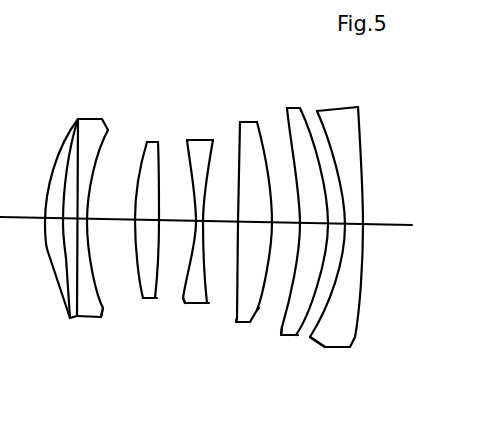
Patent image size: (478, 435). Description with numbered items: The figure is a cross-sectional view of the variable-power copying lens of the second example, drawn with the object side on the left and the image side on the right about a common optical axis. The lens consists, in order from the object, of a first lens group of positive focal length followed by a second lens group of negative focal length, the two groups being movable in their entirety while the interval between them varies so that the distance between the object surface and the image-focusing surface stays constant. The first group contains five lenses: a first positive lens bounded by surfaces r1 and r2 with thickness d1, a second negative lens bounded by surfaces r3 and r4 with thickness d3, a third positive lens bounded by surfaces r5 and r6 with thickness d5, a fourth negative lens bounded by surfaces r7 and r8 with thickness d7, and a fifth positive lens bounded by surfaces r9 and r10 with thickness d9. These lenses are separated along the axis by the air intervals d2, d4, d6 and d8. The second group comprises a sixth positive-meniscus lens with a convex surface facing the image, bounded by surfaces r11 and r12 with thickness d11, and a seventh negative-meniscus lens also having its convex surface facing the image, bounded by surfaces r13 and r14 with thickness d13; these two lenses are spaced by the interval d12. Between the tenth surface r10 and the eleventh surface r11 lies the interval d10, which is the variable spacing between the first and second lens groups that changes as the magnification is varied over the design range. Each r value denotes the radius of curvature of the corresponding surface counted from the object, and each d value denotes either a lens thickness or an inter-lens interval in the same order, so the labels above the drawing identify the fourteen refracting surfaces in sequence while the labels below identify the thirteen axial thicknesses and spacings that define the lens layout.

The radius of curvature of first surface r1 is at (76, 119).
The radius of curvature of second surface r2 is at (79, 119).
The radius of curvature of third surface r3 is at (81, 119).
The radius of curvature of fourth surface r4 is at (108, 129).
The radius of curvature of fifth surface r5 is at (147, 142).
The radius of curvature of sixth surface r6 is at (158, 142).
The radius of curvature of seventh surface r7 is at (187, 140).
The radius of curvature of eighth surface r8 is at (213, 140).
The radius of curvature of ninth surface r9 is at (240, 122).
The radius of curvature of tenth surface r10 is at (257, 122).
The radius of curvature of eleventh surface r11 is at (287, 108).
The radius of curvature of twelfth surface r12 is at (300, 108).
The radius of curvature of thirteenth surface r13 is at (318, 112).
The radius of curvature of fourteenth surface r14 is at (358, 107).
The first lens thickness d1 is at (66, 318).
The first inter-lens interval d2 is at (83, 300).
The second lens thickness d3 is at (103, 310).
The second inter-lens interval d4 is at (110, 224).
The third lens thickness d5 is at (150, 298).
The third inter-lens interval d6 is at (172, 223).
The fourth lens thickness d7 is at (197, 303).
The fourth inter-lens interval d8 is at (214, 224).
The fifth lens thickness d9 is at (260, 305).
The variable inter-lens interval d10 is at (277, 224).
The sixth lens thickness d11 is at (311, 318).
The sixth inter-lens interval d12 is at (337, 224).
The seventh lens thickness d13 is at (364, 292).